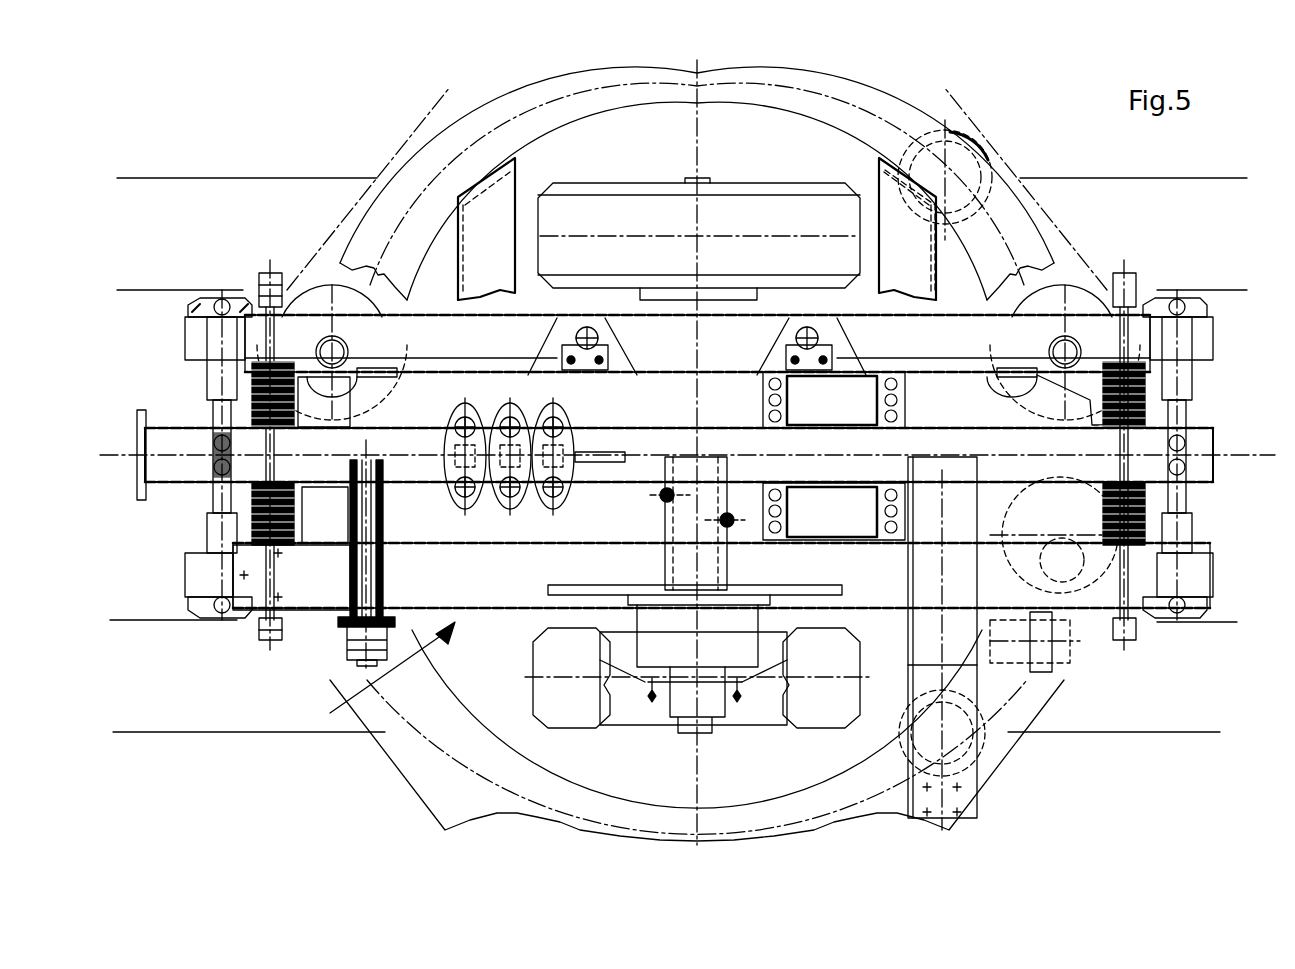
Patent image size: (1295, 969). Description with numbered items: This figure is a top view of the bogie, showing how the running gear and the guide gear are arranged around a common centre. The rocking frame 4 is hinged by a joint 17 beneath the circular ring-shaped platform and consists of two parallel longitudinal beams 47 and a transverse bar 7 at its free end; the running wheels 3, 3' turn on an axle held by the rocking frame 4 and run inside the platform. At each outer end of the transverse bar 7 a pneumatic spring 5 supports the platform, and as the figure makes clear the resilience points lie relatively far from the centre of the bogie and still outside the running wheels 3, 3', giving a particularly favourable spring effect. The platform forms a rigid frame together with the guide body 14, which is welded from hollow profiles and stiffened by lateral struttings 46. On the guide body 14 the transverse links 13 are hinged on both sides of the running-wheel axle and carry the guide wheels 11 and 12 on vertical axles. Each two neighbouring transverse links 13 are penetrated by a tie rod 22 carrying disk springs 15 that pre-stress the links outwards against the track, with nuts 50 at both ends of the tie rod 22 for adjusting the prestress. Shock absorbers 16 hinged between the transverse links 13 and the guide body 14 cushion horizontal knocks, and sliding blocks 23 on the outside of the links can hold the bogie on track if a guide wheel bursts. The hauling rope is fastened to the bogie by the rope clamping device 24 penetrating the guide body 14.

The running wheel 3 is at (702, 756).
The running wheel 3' is at (723, 177).
The rocking frame 4 is at (460, 588).
The pneumatic spring 5 is at (968, 137).
The transverse bar 7 is at (950, 618).
The guide wheel 11 is at (1087, 608).
The guide wheel 12 is at (307, 623).
The transverse link 13 is at (487, 333).
The guide body 14 is at (682, 392).
The disk spring 15 is at (1150, 497).
The shock absorber 16 is at (1180, 530).
The joint 17 is at (345, 633).
The tie rod 22 is at (272, 338).
The sliding block 23 is at (198, 298).
The rope clamping device 24 is at (505, 527).
The lateral strutting 46 is at (913, 273).
The longitudinal beam 47 is at (410, 633).
The nut 50 is at (280, 290).